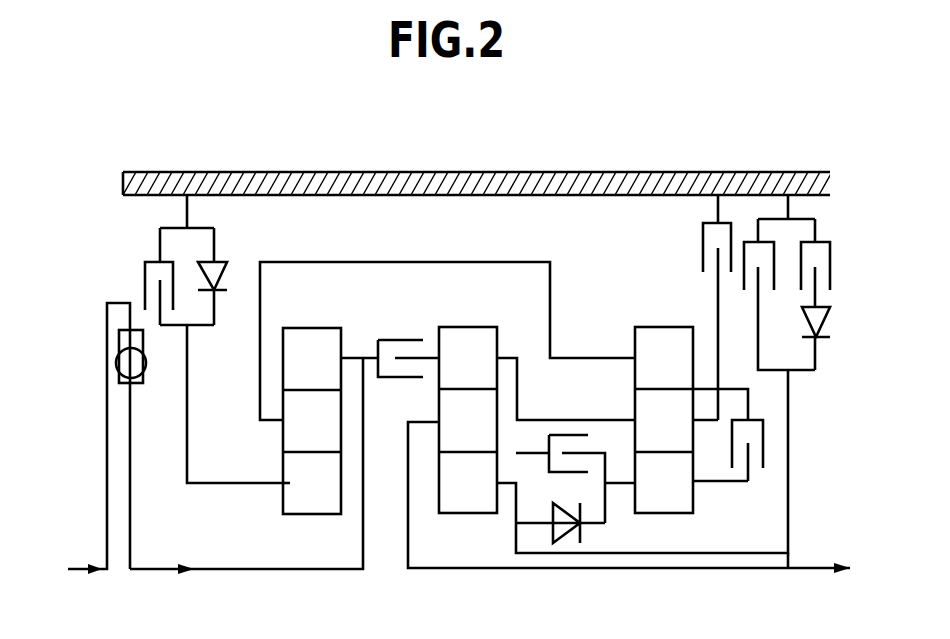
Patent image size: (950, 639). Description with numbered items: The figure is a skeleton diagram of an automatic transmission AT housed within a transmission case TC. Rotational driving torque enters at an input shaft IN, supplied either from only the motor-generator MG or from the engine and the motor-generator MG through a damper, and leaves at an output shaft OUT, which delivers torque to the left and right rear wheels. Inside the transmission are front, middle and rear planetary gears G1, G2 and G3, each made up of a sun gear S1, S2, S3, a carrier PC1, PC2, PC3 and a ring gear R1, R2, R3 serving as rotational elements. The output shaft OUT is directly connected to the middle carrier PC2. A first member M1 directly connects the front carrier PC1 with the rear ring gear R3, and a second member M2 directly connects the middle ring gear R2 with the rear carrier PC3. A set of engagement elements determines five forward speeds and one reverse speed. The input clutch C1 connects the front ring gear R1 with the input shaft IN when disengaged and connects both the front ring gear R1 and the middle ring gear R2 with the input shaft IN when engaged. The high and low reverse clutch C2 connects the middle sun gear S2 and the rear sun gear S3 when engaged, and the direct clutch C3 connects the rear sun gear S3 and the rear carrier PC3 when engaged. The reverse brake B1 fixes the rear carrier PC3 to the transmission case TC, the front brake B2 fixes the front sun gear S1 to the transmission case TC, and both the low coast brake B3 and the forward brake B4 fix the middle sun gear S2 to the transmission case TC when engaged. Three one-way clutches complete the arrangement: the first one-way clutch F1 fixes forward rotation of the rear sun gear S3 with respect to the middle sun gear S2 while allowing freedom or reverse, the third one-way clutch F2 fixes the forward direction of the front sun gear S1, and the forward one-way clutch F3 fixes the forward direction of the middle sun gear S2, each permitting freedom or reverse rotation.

The automatic transmission AT is at (138, 161).
The transmission case TC is at (437, 201).
The motor-generator MG is at (88, 442).
The input shaft IN is at (238, 568).
The output shaft OUT is at (823, 568).
The reverse brake B1 is at (700, 307).
The front brake B2 is at (202, 339).
The low coast brake B3 is at (771, 282).
The forward brake B4 is at (834, 263).
The input clutch C1 is at (390, 346).
The high & low reverse clutch C2 is at (575, 477).
The direct clutch C3 is at (745, 466).
The first one-way clutch F1 is at (560, 523).
The third one-way clutch F2 is at (224, 276).
The forward one-way clutch F3 is at (833, 338).
The front planetary gear G1 is at (312, 397).
The middle planetary gear G2 is at (629, 427).
The rear planetary gear G3 is at (691, 397).
The front ring gear R1 is at (312, 369).
The middle ring gear R2 is at (468, 368).
The rear ring gear R3 is at (691, 384).
The front carrier PC1 is at (312, 431).
The middle carrier PC2 is at (629, 491).
The rear carrier PC3 is at (676, 431).
The front sun gear S1 is at (305, 485).
The middle sun gear S2 is at (620, 461).
The rear sun gear S3 is at (698, 485).
The first member M1 is at (380, 262).
The second member M2 is at (515, 358).